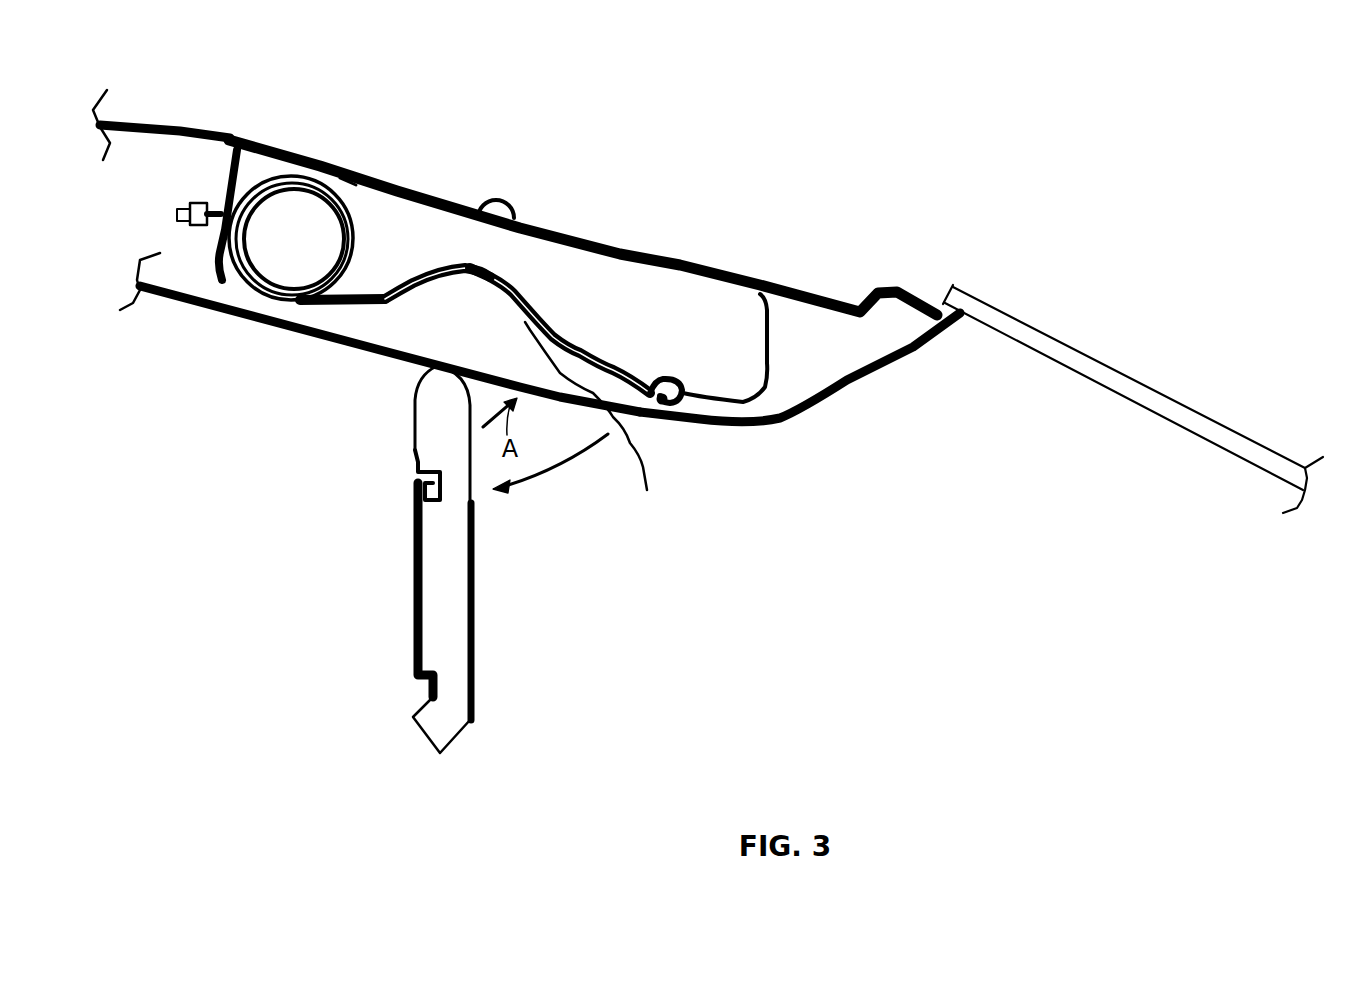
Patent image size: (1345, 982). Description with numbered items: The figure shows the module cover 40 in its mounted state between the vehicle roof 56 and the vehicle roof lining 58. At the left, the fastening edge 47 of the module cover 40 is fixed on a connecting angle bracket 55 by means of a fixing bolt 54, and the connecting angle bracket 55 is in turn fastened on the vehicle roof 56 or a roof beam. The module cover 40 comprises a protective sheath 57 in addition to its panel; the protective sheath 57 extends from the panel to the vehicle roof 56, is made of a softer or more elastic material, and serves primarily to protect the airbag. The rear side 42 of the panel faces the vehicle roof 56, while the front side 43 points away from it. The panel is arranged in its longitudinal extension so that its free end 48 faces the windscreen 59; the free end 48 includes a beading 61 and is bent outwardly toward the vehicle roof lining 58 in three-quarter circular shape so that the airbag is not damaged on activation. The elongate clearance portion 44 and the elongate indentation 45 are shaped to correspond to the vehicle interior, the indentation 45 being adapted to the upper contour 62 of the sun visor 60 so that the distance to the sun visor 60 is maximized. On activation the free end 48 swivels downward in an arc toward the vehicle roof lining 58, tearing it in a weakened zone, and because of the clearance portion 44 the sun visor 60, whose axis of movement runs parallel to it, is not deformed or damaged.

The module cover 40 is at (190, 258).
The rear side 42 is at (530, 290).
The front side 43 is at (318, 318).
The elongate clearance portion 44 is at (477, 290).
The elongate indentation 45 is at (591, 422).
The fastening edge 47 is at (208, 230).
The free end 48 is at (683, 397).
The fixing bolt 54 is at (177, 212).
The connecting angle bracket 55 is at (235, 163).
The vehicle roof 56 is at (200, 124).
The protective sheath 57 is at (347, 180).
The vehicle roof lining 58 is at (897, 368).
The windscreen 59 is at (1160, 395).
The sun visor 60 is at (443, 717).
The beading 61 is at (660, 410).
The upper contour 62 is at (414, 392).